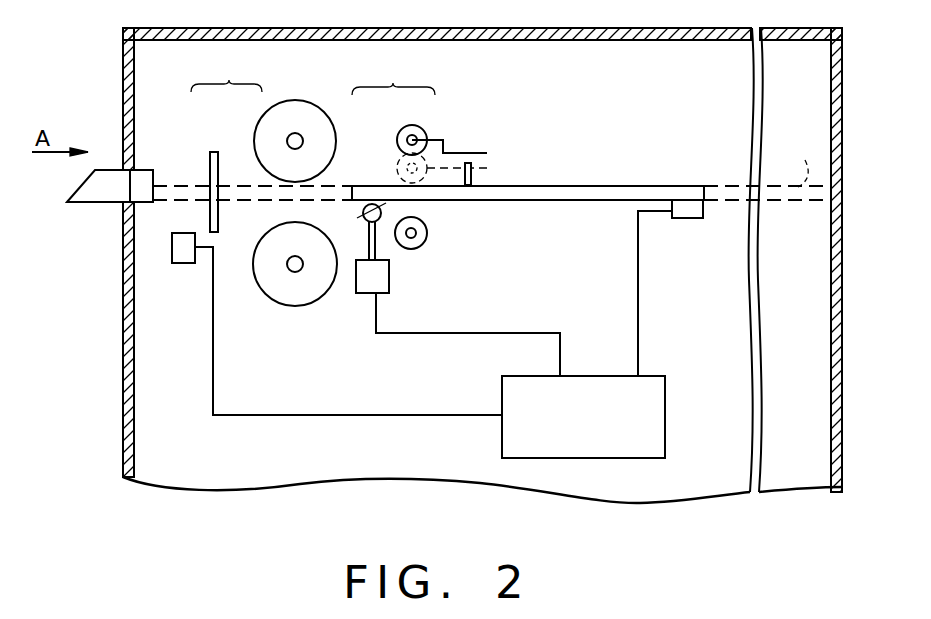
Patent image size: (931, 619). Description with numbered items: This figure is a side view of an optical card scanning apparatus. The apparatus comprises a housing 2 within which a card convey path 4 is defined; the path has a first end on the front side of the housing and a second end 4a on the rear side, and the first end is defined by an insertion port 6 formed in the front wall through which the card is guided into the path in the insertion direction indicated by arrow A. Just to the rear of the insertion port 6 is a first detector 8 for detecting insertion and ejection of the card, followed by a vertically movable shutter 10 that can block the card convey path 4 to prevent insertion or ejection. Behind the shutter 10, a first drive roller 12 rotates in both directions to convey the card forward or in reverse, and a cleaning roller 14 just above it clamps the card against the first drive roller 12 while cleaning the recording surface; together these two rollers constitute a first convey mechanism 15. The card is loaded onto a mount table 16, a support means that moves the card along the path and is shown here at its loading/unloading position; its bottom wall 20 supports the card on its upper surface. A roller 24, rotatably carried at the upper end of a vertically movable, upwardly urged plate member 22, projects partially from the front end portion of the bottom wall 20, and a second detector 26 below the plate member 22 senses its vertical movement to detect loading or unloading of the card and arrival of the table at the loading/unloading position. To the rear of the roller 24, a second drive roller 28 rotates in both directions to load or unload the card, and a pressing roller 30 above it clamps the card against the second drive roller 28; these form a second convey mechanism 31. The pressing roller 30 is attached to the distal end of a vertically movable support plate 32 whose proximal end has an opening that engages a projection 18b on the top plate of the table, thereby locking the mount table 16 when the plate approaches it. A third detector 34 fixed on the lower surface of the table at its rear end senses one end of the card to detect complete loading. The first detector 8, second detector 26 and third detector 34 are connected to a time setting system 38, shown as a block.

The housing 2 is at (628, 28).
The card convey path 4 is at (710, 186).
The second end 4a is at (795, 161).
The insertion port 6 is at (91, 204).
The first detector 8 is at (183, 263).
The shutter 10 is at (210, 160).
The first drive roller 12 is at (258, 232).
The cleaning roller 14 is at (259, 128).
The first convey mechanism 15 is at (226, 71).
The mount table 16 is at (590, 186).
The projection 18b is at (474, 172).
The bottom wall 20 is at (556, 201).
The plate member 22 is at (377, 242).
The roller 24 is at (358, 214).
The second detector 26 is at (366, 293).
The second drive roller 28 is at (399, 221).
The pressing roller 30 is at (442, 139).
The second convey mechanism 31 is at (393, 75).
The support plate 32 is at (470, 152).
The third detector 34 is at (692, 218).
The time setting system 38 is at (666, 400).